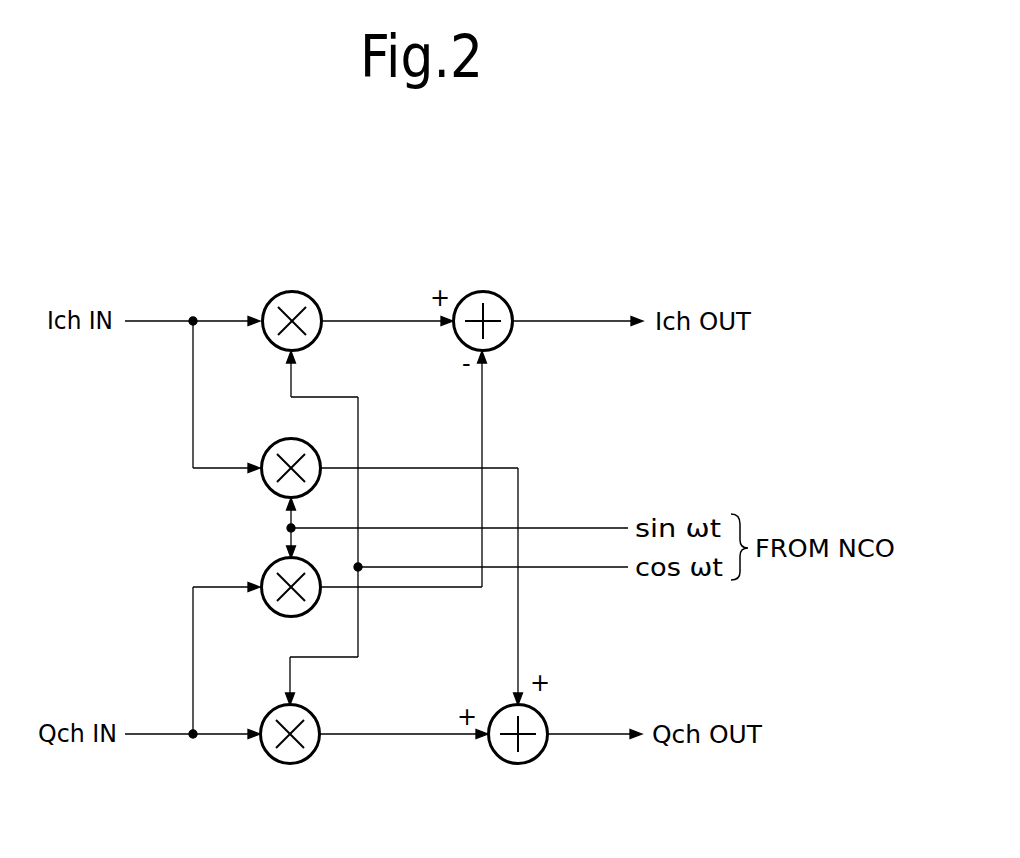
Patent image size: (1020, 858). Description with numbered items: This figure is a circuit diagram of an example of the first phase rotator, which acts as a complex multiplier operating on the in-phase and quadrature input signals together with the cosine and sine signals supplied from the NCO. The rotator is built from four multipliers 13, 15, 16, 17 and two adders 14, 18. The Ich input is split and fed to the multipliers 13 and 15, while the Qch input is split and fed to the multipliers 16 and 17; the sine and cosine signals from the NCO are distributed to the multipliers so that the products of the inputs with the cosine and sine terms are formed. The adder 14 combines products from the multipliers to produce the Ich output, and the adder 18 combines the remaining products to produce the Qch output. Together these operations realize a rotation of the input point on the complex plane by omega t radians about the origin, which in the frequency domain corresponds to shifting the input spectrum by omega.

The multiplier 13 is at (292, 291).
The adder 14 is at (483, 291).
The multiplier 15 is at (271, 446).
The multiplier 16 is at (271, 609).
The multiplier 17 is at (290, 764).
The adder 18 is at (518, 764).